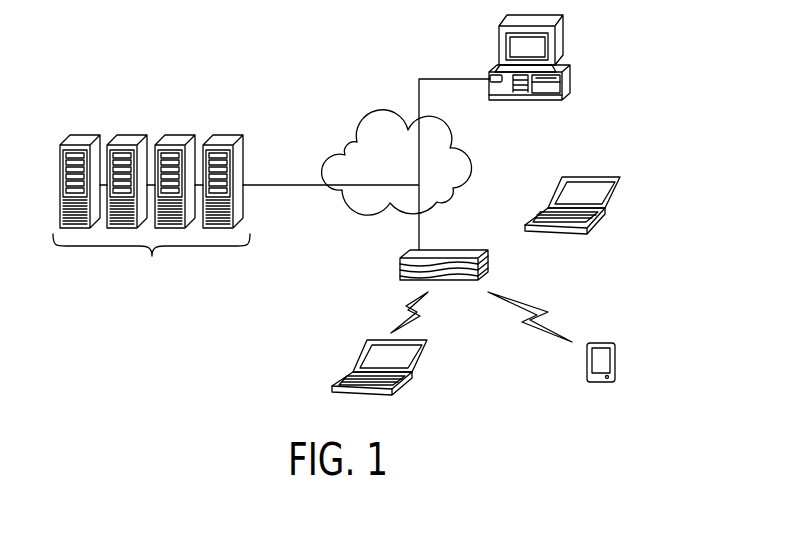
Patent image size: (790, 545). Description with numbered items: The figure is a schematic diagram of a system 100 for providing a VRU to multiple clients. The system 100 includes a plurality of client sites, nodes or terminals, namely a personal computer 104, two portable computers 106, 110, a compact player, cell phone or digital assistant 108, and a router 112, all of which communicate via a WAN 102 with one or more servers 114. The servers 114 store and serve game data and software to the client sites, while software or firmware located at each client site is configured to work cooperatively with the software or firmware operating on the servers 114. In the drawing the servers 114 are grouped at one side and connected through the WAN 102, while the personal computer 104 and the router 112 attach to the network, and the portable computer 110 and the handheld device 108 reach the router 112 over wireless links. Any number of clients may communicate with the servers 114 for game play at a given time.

The system 100 is at (393, 74).
The WAN 102 is at (352, 153).
The personal computer 104 is at (530, 102).
The portable computer 106 is at (597, 223).
The compact player, cell phone or digital assistant 108 is at (588, 363).
The portable computer 110 is at (402, 386).
The router 112 is at (490, 260).
The servers 114 is at (151, 216).